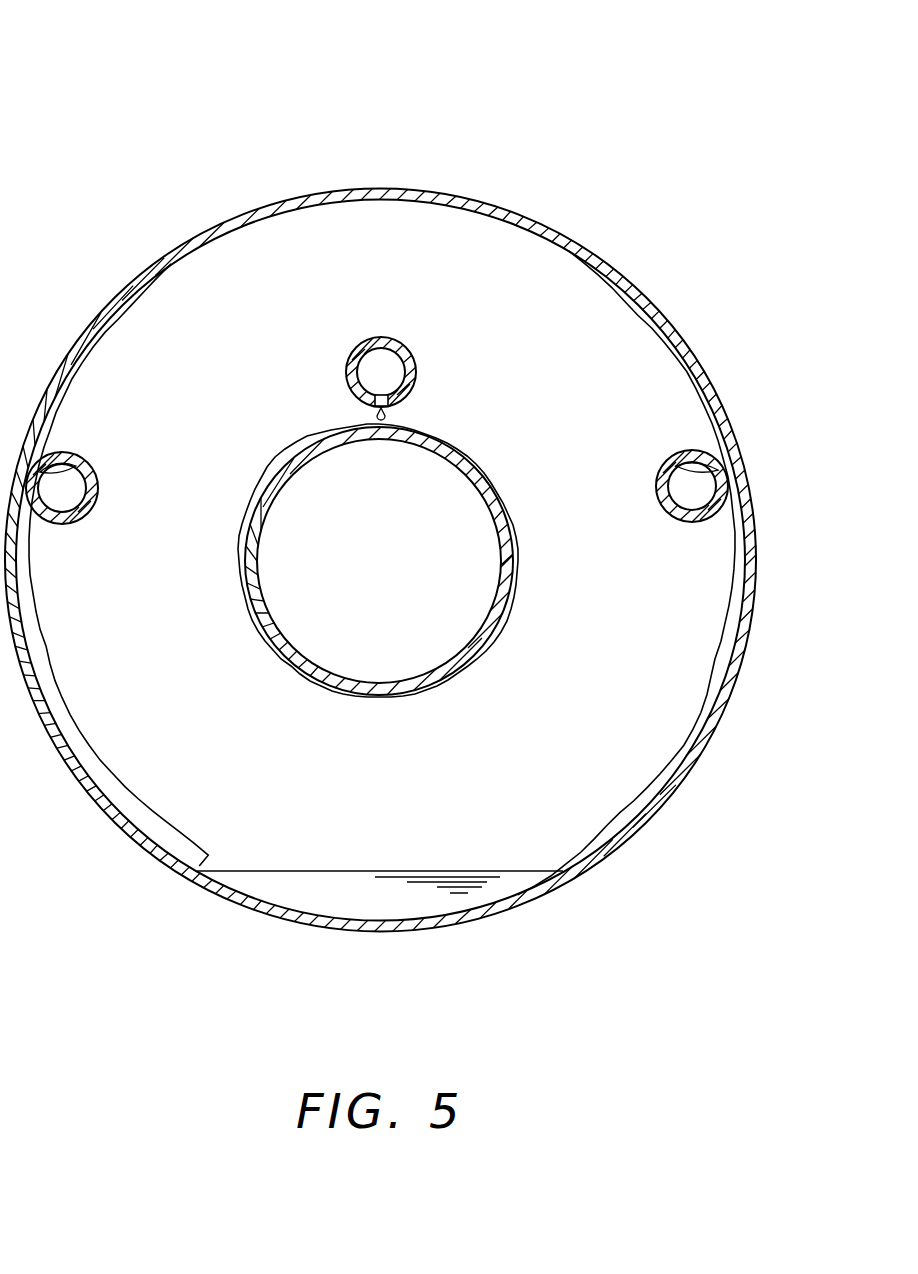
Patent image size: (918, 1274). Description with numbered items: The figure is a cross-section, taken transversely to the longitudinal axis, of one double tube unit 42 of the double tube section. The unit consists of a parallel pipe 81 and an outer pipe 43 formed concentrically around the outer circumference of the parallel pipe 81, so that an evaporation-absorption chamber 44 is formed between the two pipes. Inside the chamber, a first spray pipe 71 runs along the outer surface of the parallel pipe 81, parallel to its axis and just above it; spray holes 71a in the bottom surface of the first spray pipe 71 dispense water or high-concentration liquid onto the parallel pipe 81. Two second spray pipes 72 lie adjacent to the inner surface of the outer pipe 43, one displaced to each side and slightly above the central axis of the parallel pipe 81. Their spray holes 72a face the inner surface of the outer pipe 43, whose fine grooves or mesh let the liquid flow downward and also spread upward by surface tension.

The double tube unit 42 is at (195, 91).
The outer pipe 43 is at (519, 908).
The evaporation-absorption chamber 44 is at (527, 268).
The first spray pipe 71 is at (345, 345).
The spray holes 71a is at (394, 412).
The second spray pipe 72 is at (96, 508).
The spray holes 72a is at (64, 470).
The parallel pipe 81 is at (302, 668).